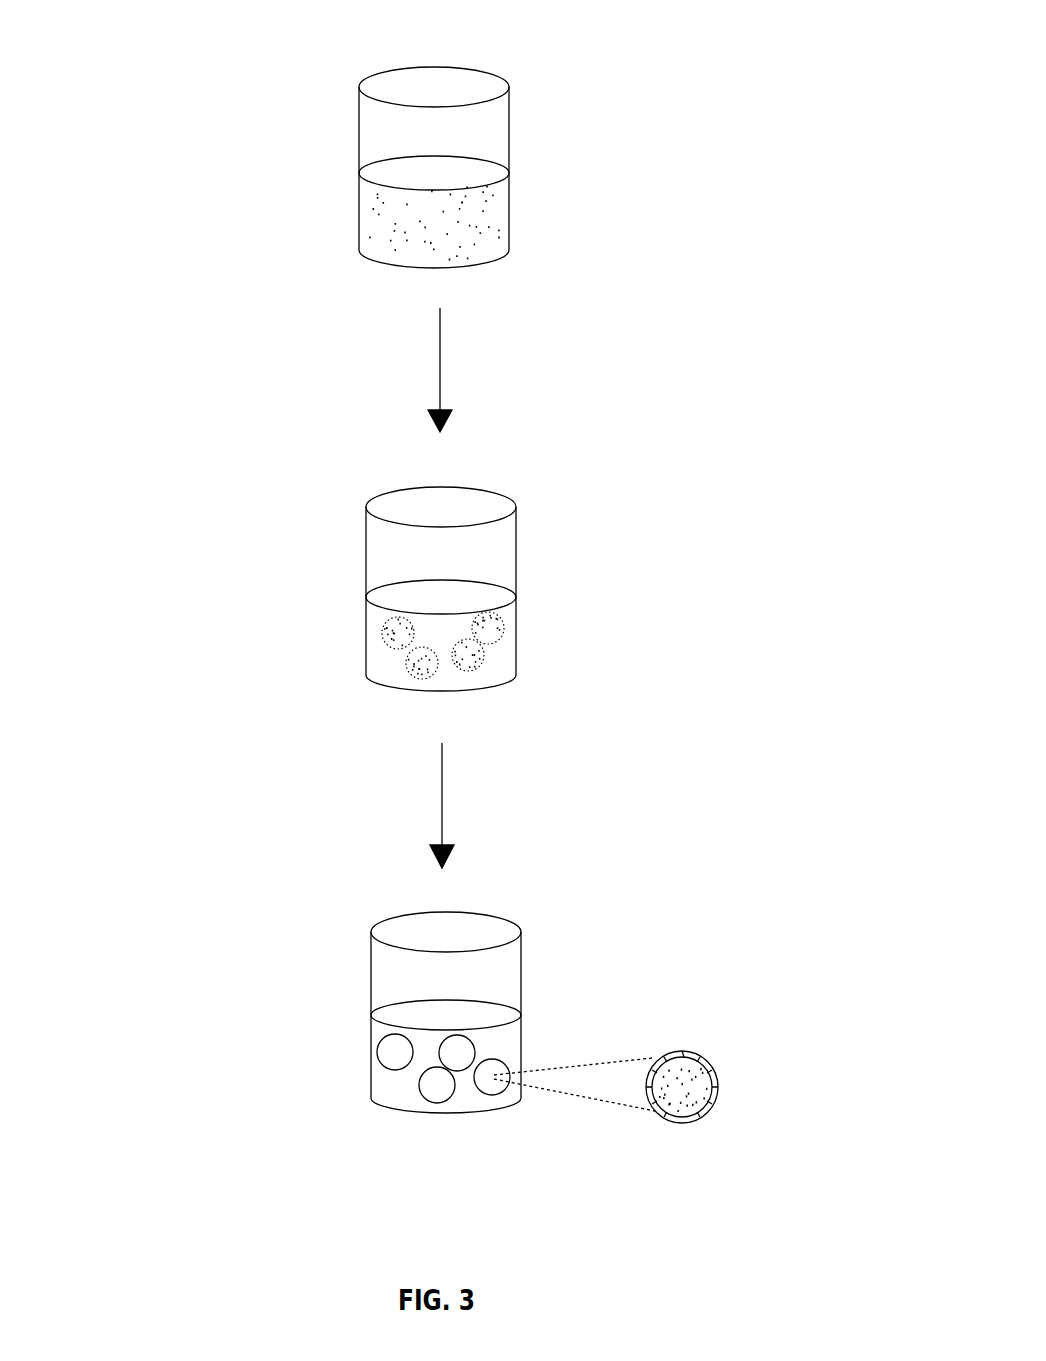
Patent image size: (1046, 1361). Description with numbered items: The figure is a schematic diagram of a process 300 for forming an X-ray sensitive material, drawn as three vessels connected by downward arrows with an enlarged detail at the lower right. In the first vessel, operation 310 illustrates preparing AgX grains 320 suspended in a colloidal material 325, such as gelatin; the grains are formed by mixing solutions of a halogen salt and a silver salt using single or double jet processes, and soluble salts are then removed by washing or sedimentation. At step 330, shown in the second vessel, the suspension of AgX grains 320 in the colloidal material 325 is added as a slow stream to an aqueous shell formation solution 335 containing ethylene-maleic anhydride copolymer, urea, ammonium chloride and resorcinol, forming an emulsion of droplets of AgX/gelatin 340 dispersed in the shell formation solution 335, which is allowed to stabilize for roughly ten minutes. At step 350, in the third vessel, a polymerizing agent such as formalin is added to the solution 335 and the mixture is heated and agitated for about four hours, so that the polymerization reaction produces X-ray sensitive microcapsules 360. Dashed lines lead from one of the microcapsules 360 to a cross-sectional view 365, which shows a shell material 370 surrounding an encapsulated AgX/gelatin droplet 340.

The process of forming an X-ray sensitive material 300 is at (128, 110).
The operation for preparing AgX grains 310 is at (612, 50).
The AgX grains 320 is at (370, 193).
The colloidal material 325 is at (500, 242).
The step of adding suspension to shell formation solution 330 is at (645, 405).
The aqueous shell formation solution 335 is at (505, 660).
The droplets of AgX/gelatin 340 is at (378, 660).
The step of adding polymerizing agent 350 is at (630, 887).
The X-ray sensitive microcapsules 360 is at (385, 1082).
The cross-sectional view 365 is at (787, 1080).
The shell material 370 is at (705, 1062).